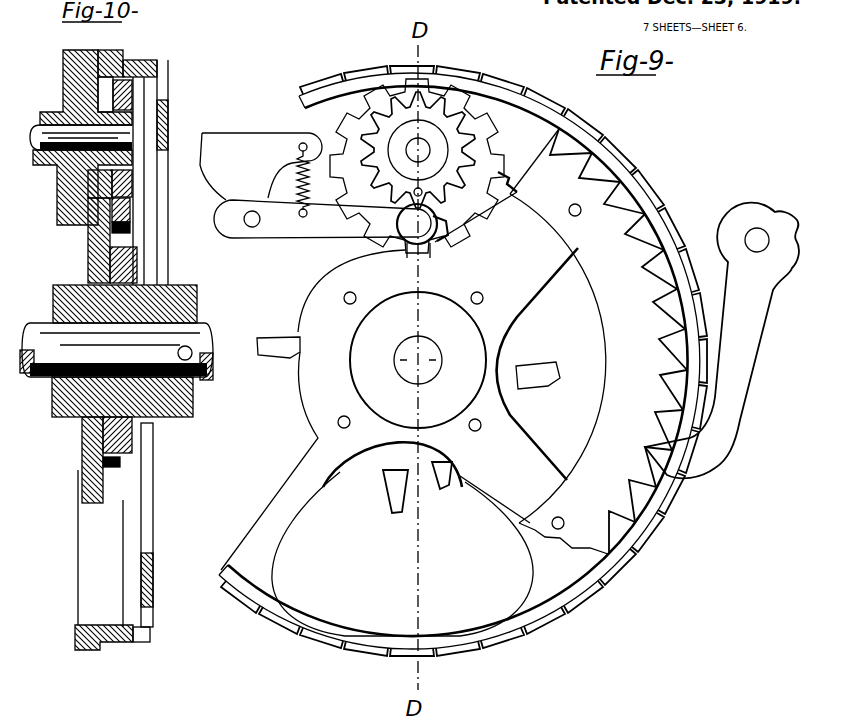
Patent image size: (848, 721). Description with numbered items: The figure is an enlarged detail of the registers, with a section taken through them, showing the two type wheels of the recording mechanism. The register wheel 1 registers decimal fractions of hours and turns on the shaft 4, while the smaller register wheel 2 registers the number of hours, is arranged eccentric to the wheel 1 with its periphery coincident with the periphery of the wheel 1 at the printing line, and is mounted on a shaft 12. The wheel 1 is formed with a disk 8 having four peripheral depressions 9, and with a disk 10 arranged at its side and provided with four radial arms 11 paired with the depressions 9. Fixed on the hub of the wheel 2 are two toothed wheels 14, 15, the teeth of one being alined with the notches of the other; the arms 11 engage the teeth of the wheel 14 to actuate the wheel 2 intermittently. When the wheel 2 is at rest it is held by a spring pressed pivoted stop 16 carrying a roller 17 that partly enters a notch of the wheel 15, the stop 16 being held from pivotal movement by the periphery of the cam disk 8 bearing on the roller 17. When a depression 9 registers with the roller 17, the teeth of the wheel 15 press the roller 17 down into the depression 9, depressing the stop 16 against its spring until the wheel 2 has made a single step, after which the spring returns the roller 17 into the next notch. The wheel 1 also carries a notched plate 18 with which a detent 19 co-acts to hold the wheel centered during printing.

In FIG. 9, the register wheel 1 is at (333, 73).
In FIG. 10, the register wheel 1 is at (112, 55).
In FIG. 9, the register wheel 2 is at (338, 136).
In FIG. 10, the register wheel 2 is at (63, 70).
In FIG. 9, the shaft 4 is at (418, 360).
In FIG. 10, the shaft 4 is at (200, 340).
In FIG. 9, the disk 8 is at (438, 486).
In FIG. 10, the disk 8 is at (132, 447).
In FIG. 9, the peripheral depressions 9 is at (387, 253).
In FIG. 10, the peripheral depressions 9 is at (120, 463).
In FIG. 10, the disk 10 is at (85, 437).
In FIG. 9, the radial arms 11 is at (282, 362).
In FIG. 10, the radial arms 11 is at (100, 230).
In FIG. 9, the shaft 12 is at (410, 140).
In FIG. 10, the shaft 12 is at (33, 152).
In FIG. 9, the toothed wheel 14 is at (478, 118).
In FIG. 10, the toothed wheel 14 is at (105, 85).
In FIG. 9, the toothed wheel 15 is at (465, 158).
In FIG. 10, the toothed wheel 15 is at (132, 90).
In FIG. 9, the spring pressed pivoted stop 16 is at (298, 230).
In FIG. 10, the spring pressed pivoted stop 16 is at (135, 213).
In FIG. 9, the roller 17 is at (438, 234).
In FIG. 10, the roller 17 is at (130, 230).
In FIG. 9, the notched plate 18 is at (615, 290).
In FIG. 10, the notched plate 18 is at (153, 580).
In FIG. 9, the detent 19 is at (713, 465).